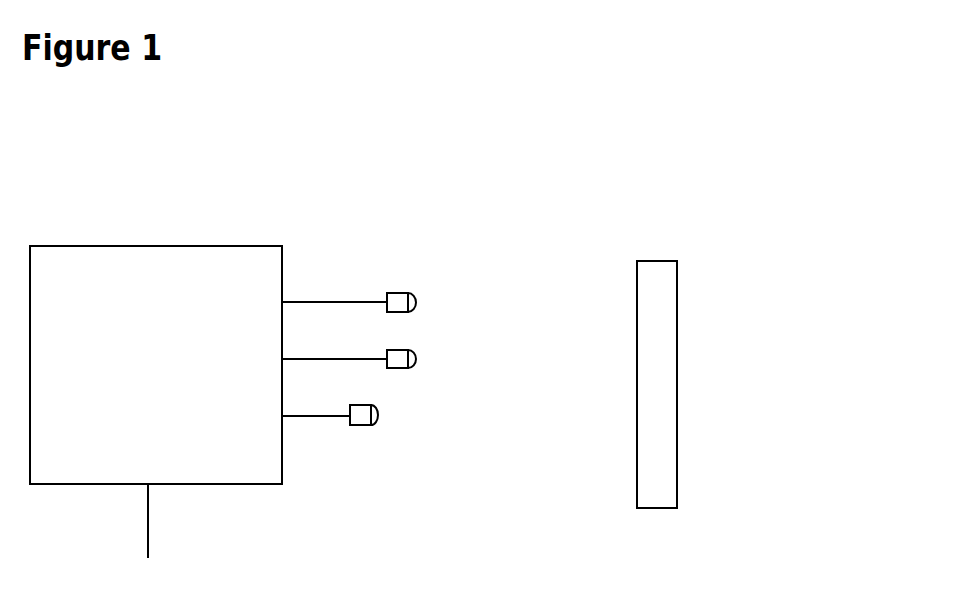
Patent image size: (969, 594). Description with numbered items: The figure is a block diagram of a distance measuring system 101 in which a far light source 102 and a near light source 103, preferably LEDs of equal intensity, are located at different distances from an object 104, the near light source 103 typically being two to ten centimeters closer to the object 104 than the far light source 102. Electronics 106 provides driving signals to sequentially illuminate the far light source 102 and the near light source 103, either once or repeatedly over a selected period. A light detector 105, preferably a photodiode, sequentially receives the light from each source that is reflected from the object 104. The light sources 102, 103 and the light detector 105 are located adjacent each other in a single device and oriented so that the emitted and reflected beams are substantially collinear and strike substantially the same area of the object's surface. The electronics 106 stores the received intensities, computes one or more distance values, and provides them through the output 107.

The distance measuring system 101 is at (829, 212).
The far light source 102 is at (358, 425).
The near light source 103 is at (407, 368).
The object 104 is at (678, 363).
The light detector 105 is at (417, 304).
The electronics 106 is at (182, 246).
The output 107 is at (157, 541).